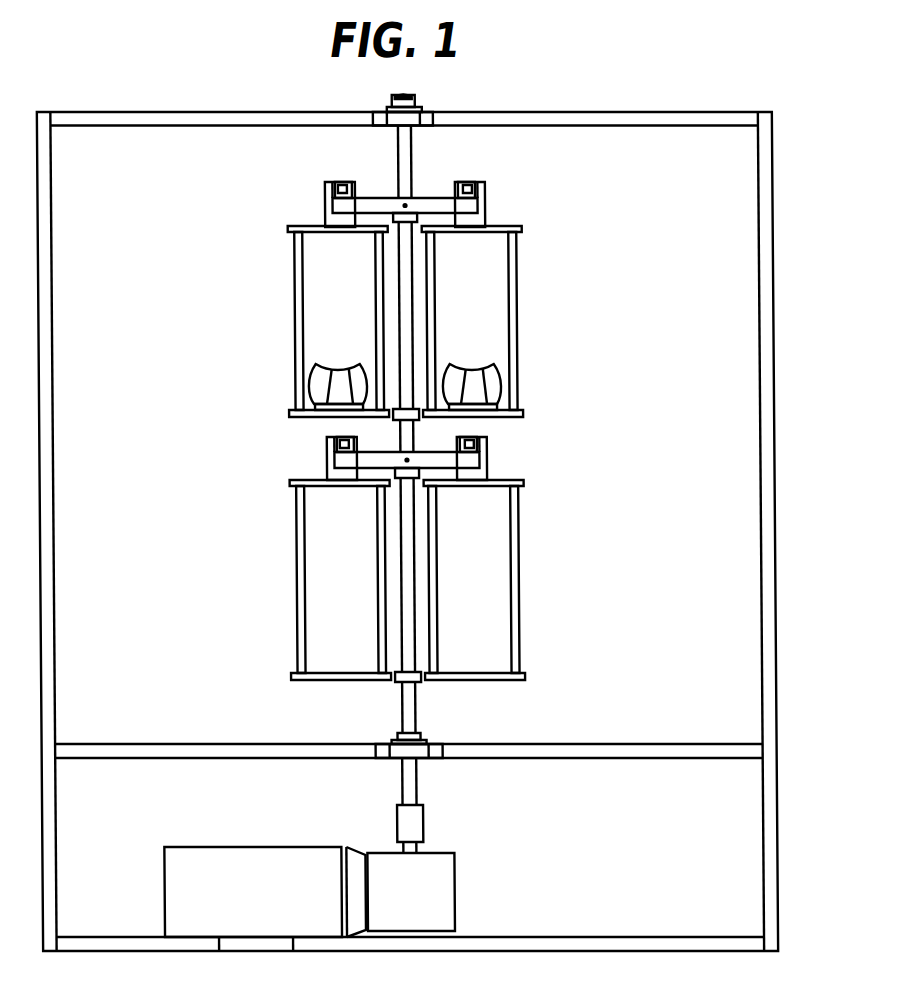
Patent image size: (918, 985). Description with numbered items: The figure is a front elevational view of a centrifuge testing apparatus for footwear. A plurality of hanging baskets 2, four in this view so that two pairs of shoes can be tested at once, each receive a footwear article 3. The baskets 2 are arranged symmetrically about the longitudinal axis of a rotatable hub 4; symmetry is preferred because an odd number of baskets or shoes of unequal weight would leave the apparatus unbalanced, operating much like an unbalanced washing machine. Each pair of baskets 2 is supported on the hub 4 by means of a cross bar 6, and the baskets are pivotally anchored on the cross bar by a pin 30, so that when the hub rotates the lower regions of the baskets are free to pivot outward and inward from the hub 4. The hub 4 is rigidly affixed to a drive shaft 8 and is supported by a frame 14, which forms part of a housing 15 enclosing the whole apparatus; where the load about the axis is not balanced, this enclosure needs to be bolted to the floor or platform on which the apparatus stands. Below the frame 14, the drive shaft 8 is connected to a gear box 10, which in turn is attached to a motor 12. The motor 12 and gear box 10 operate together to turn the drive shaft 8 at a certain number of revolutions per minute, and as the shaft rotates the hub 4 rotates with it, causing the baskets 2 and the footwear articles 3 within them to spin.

The hanging basket 2 is at (513, 325).
The footwear article 3 is at (497, 389).
The rotatable hub 4 is at (410, 440).
The cross bar 6 is at (407, 322).
The drive shaft 8 is at (411, 788).
The gear box 10 is at (448, 910).
The motor 12 is at (242, 847).
The frame 14 is at (749, 753).
The housing 15 is at (771, 603).
The pin 30 is at (477, 448).